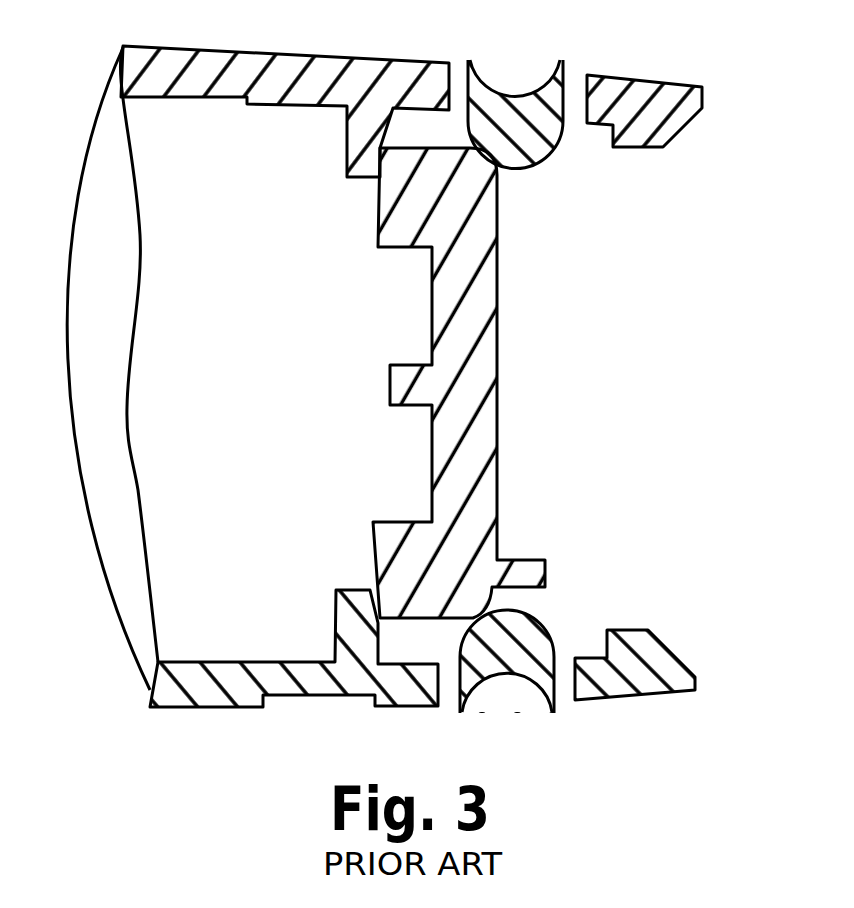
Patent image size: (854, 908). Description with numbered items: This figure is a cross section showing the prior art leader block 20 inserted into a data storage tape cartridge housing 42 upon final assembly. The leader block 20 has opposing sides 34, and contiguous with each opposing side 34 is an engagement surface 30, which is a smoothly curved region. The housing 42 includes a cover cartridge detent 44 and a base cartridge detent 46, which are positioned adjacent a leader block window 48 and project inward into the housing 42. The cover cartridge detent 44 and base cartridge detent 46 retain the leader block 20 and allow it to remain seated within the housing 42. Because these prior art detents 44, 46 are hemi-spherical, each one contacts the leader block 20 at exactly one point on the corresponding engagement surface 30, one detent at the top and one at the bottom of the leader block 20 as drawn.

The leader block 20 is at (460, 350).
The engagement surface 30 is at (489, 165).
The opposing sides 34 is at (430, 147).
The data storage tape cartridge housing 42 is at (103, 368).
The cover cartridge detent 44 is at (522, 102).
The base cartridge detent 46 is at (512, 662).
The leader block window 48 is at (665, 153).